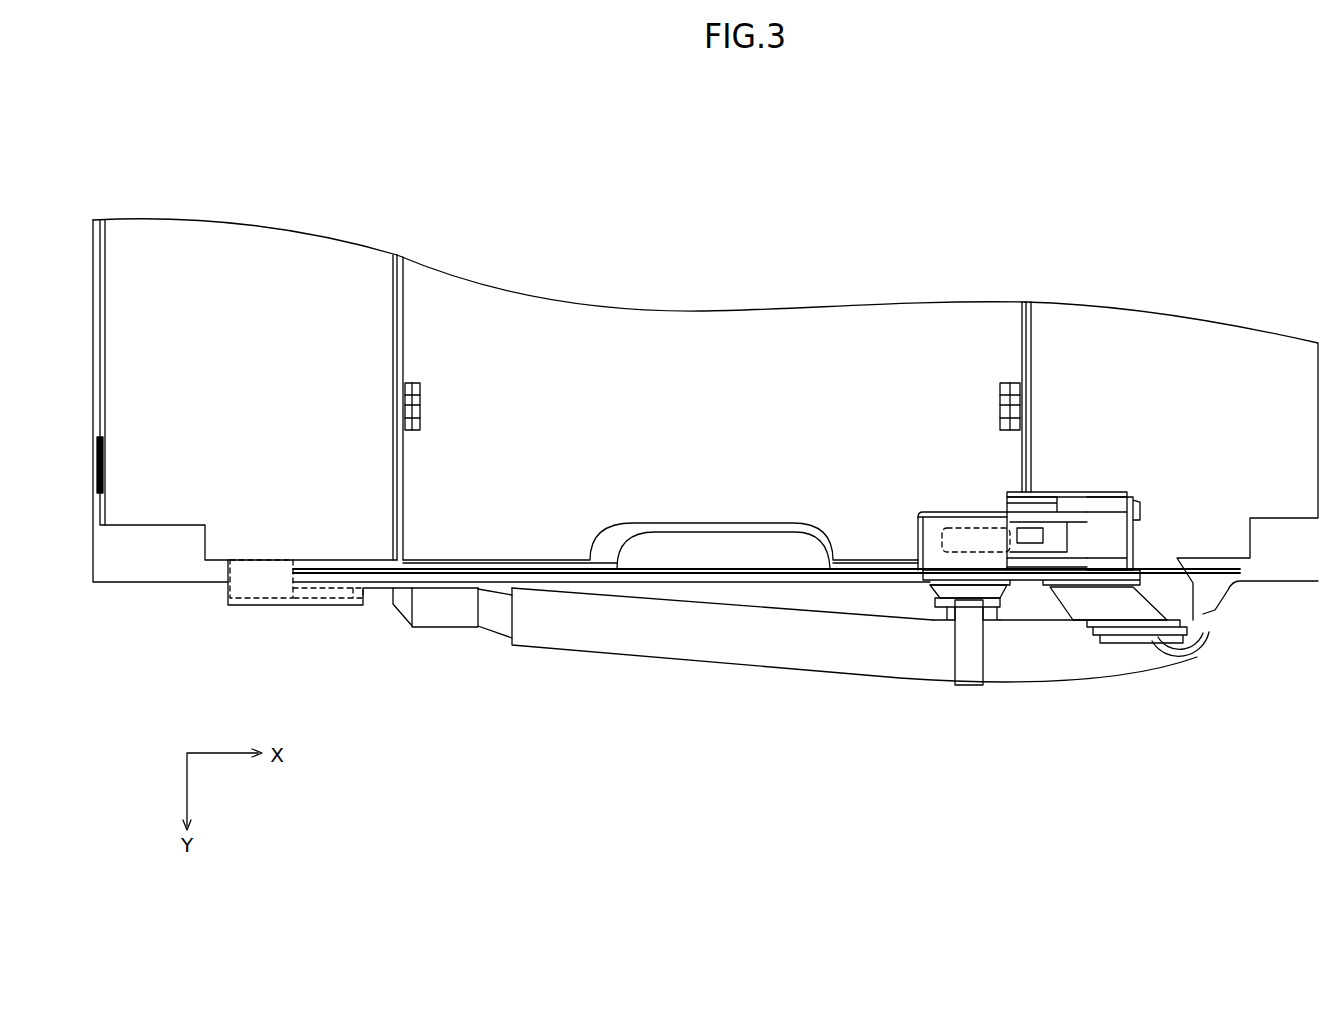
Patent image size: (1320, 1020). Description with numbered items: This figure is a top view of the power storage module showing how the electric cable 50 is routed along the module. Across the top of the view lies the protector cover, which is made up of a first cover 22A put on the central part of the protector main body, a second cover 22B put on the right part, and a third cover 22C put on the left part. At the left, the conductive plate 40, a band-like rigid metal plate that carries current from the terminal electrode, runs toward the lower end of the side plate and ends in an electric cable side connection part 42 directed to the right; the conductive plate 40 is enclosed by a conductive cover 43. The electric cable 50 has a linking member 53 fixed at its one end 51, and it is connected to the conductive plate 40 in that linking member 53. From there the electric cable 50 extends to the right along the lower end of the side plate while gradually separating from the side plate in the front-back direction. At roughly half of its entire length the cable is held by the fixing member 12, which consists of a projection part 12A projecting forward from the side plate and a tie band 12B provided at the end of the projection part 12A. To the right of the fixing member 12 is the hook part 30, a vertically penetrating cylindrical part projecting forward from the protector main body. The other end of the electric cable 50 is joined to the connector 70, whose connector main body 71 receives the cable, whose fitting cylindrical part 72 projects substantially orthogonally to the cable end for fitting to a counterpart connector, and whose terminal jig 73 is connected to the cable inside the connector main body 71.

The third cover 22C is at (282, 262).
The first cover 22A is at (612, 350).
The second cover 22B is at (1258, 378).
The connector 70 is at (1063, 232).
The terminal jig 73 is at (940, 530).
The fitting cylindrical part 72 is at (965, 525).
The connector main body 71 is at (1160, 535).
The conductive cover 43 is at (228, 592).
The conductive plate 40 is at (258, 598).
The electric cable side connection part 42 is at (357, 598).
The linking member 53 is at (442, 627).
The one end 51 is at (487, 627).
The electric cable 50 is at (655, 658).
The hook part 30 is at (1192, 652).
The fixing member 12 is at (875, 764).
The projection part 12A is at (932, 603).
The tie band 12B is at (966, 690).